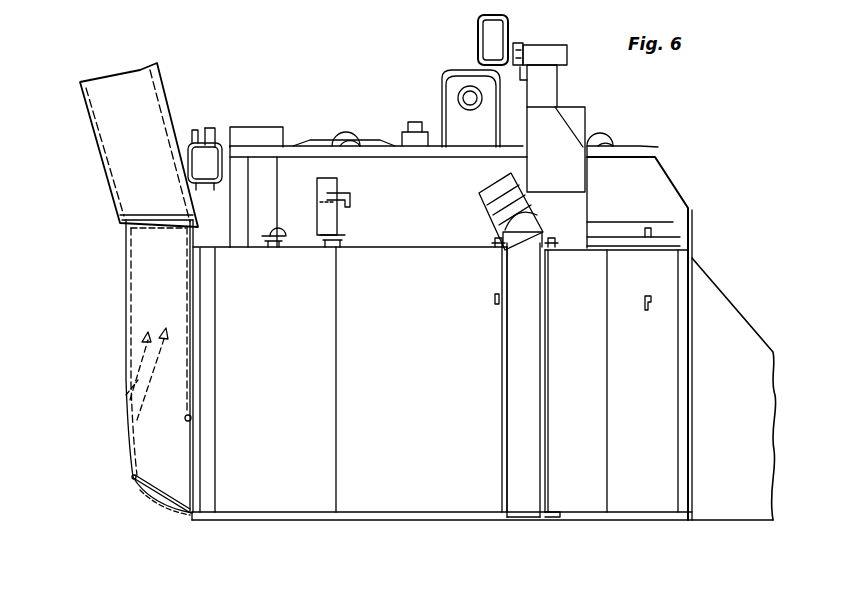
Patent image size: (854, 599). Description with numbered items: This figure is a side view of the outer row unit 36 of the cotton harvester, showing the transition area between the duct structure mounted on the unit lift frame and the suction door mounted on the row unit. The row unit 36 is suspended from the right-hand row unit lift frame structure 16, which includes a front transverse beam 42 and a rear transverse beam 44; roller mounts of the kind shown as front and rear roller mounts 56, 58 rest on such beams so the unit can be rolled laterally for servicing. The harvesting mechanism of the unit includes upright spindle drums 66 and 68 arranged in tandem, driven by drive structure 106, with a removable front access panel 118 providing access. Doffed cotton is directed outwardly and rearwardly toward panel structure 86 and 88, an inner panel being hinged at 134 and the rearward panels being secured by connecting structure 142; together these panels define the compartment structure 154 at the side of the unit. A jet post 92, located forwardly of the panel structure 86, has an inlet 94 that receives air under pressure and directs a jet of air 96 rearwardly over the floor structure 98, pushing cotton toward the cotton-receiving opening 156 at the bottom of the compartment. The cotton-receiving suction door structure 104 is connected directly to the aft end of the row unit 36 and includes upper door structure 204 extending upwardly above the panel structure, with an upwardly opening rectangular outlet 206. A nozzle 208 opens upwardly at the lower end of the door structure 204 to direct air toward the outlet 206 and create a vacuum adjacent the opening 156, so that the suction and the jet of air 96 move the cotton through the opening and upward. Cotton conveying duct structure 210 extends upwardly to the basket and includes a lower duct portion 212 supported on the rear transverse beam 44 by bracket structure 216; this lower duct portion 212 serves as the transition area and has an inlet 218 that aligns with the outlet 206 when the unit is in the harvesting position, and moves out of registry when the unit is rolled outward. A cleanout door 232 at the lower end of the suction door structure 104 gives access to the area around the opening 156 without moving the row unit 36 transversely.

The right-hand row unit lift frame structure 16 is at (248, 80).
The row unit 36 is at (315, 100).
The front transverse beam 42 is at (477, 25).
The rear transverse beam 44 is at (215, 186).
The front roller mount 56 is at (554, 50).
The rear roller mount 58 is at (216, 128).
The upright spindle drum 66 is at (633, 140).
The upright spindle drum 68 is at (315, 143).
The panel structure 86 is at (440, 240).
The panel structure 88 is at (283, 207).
The jet post 92 is at (504, 365).
The inlet 94 is at (495, 190).
The jet of air 96 is at (480, 497).
The floor structure 98 is at (385, 524).
The cotton-receiving suction door structure 104 is at (118, 461).
The drive structure 106 is at (437, 100).
The removable front access panel 118 is at (656, 403).
The hinge 134 is at (270, 240).
The connecting structure 142 is at (362, 241).
The compartment structure 154 is at (518, 527).
The cotton-receiving opening 156 is at (218, 470).
The upper door structure 204 is at (128, 272).
The outlet 206 is at (152, 219).
The nozzle 208 is at (128, 455).
The cotton conveying duct structure 210 is at (86, 119).
The lower duct portion 212 is at (100, 145).
The bracket structure 216 is at (190, 116).
The inlet 218 is at (150, 200).
The cleanout door 232 is at (145, 503).